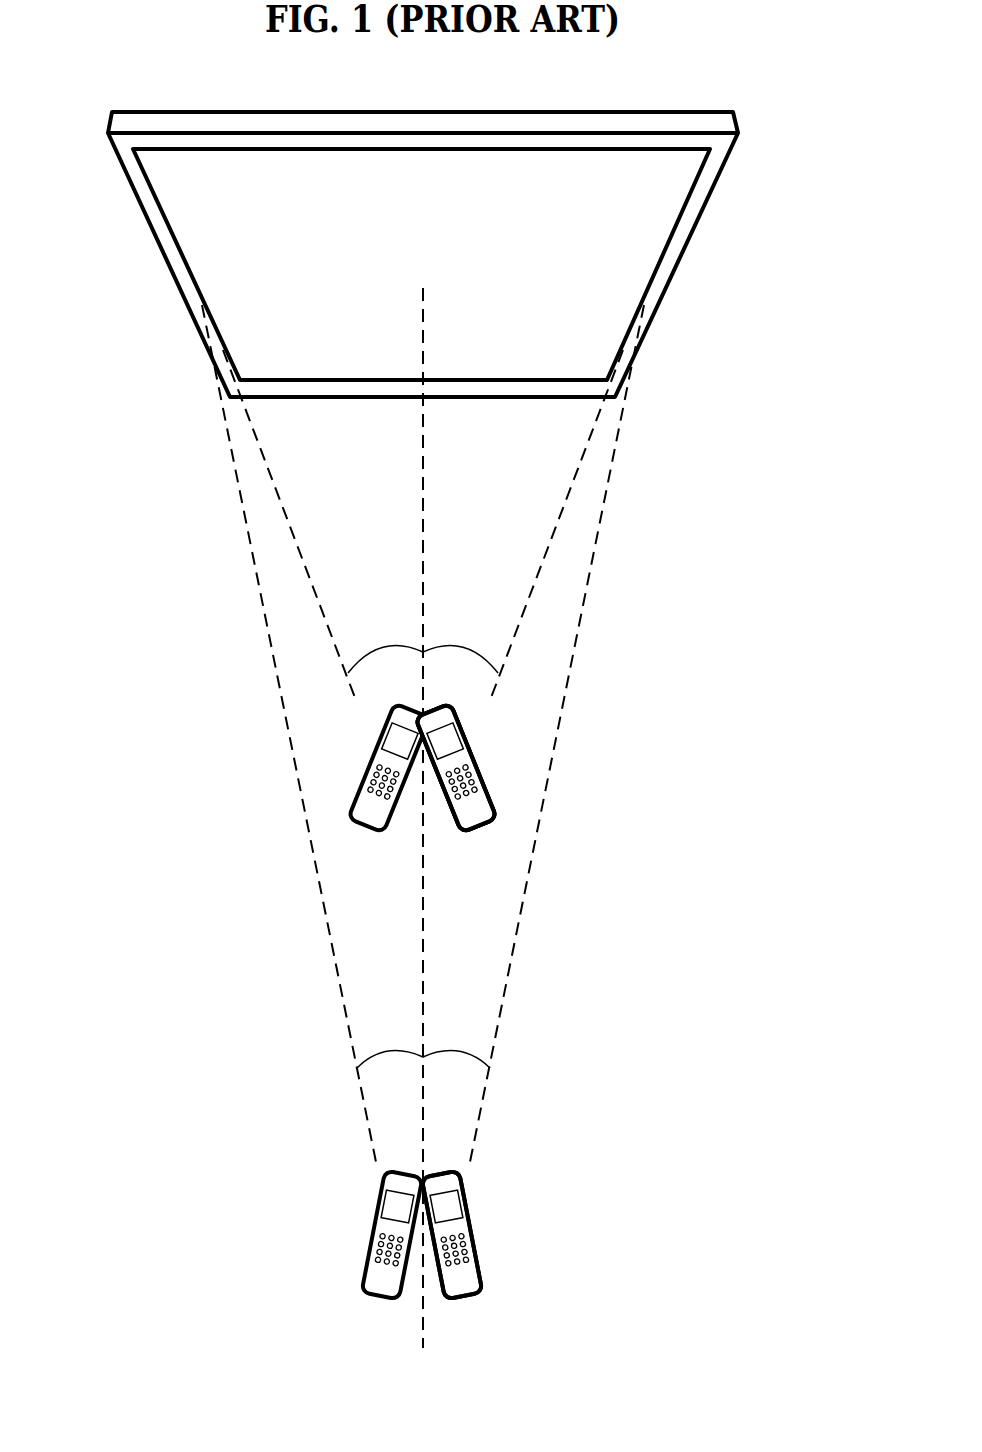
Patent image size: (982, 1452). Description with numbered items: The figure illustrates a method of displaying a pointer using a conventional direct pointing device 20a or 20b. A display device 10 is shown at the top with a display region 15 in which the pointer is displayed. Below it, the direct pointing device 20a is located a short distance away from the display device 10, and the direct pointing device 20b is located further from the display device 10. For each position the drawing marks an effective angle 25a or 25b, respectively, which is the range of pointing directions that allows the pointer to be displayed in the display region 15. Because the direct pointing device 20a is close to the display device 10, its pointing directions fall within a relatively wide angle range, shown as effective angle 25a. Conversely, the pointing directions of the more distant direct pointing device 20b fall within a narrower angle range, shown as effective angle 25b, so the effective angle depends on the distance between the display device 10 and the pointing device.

The display device 10 is at (692, 240).
The display region 15 is at (425, 170).
The direct pointing device 20a is at (477, 778).
The direct pointing device 20b is at (478, 1229).
The effective angle 25a is at (463, 613).
The effective angle 25b is at (476, 1013).